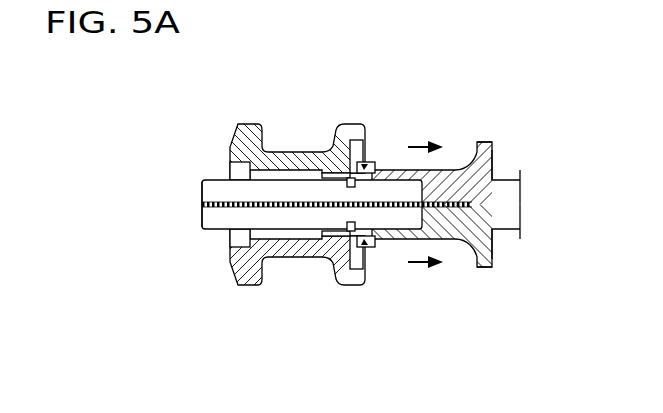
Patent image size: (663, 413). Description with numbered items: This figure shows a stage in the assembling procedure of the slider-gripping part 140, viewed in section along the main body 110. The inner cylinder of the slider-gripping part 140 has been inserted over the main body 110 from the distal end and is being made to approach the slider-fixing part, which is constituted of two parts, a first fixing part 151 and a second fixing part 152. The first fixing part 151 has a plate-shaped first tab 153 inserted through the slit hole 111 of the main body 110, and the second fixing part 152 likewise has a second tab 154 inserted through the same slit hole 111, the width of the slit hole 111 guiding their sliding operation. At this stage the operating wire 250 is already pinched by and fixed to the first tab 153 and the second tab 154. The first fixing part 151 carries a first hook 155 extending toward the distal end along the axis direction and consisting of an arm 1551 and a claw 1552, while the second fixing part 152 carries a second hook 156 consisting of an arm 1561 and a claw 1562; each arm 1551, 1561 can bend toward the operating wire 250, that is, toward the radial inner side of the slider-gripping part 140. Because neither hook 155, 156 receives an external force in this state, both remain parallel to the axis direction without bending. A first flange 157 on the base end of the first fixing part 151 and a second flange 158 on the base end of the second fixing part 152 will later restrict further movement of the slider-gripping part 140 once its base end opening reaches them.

The main body 110 is at (222, 175).
The slit hole 111 is at (222, 222).
The slider-gripping part 140 is at (294, 112).
The first fixing part 151 is at (474, 115).
The second fixing part 152 is at (474, 295).
The first tab 153 is at (490, 160).
The second tab 154 is at (493, 257).
The first hook 155 is at (380, 121).
The arm 1551 is at (374, 163).
The claw 1552 is at (353, 141).
The second hook 156 is at (380, 290).
The arm 1561 is at (374, 248).
The claw 1562 is at (356, 236).
The first flange 157 is at (492, 146).
The second flange 158 is at (493, 268).
The operating wire 250 is at (309, 212).